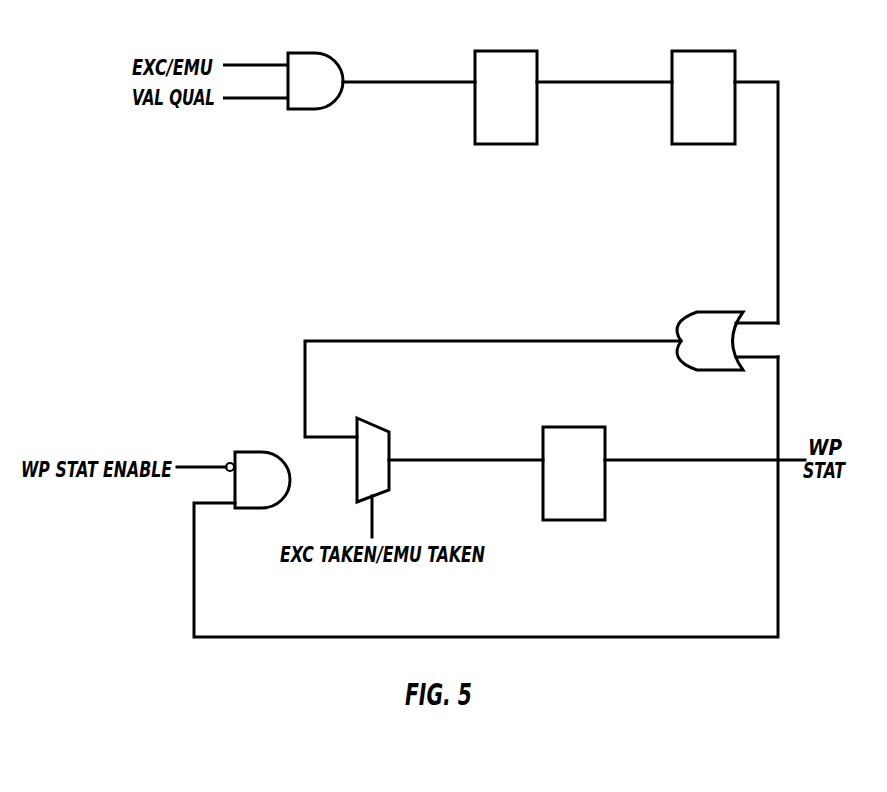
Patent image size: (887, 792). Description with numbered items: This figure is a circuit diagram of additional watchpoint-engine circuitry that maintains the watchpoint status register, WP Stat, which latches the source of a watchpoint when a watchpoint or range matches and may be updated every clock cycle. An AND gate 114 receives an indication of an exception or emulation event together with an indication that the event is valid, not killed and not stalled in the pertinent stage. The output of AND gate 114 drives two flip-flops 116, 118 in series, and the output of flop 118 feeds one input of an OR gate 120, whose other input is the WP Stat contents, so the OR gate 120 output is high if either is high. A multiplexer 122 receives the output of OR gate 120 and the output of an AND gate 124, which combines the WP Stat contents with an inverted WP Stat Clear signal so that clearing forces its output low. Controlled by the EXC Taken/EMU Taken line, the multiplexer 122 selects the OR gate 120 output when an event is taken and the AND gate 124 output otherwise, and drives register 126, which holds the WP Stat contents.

The AND gate 114 is at (298, 53).
The flip-flop 116 is at (500, 51).
The flip-flop 118 is at (693, 51).
The OR gate 120 is at (713, 312).
The multiplexer 122 is at (383, 430).
The AND gate 124 is at (269, 452).
The register 126 is at (578, 426).